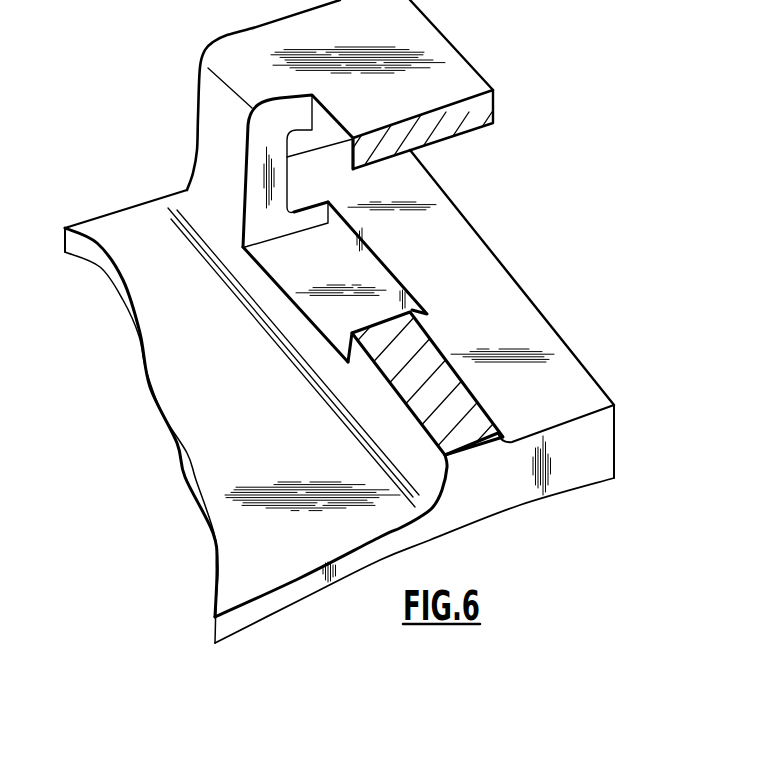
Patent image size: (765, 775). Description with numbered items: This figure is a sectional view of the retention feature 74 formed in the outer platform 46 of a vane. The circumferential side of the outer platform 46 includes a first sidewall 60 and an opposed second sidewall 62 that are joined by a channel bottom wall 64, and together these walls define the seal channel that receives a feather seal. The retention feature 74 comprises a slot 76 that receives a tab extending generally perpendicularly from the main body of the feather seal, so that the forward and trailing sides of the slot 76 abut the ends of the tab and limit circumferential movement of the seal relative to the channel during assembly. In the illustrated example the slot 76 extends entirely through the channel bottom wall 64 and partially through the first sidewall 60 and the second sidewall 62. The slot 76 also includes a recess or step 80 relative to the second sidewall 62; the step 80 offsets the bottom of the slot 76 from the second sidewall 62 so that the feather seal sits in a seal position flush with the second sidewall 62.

The outer platform 46 is at (127, 82).
The first sidewall 60 is at (443, 75).
The second sidewall 62 is at (590, 442).
The channel bottom wall 64 is at (220, 153).
The retention feature 74 is at (324, 334).
The slot 76 is at (275, 260).
The step 80 is at (341, 230).